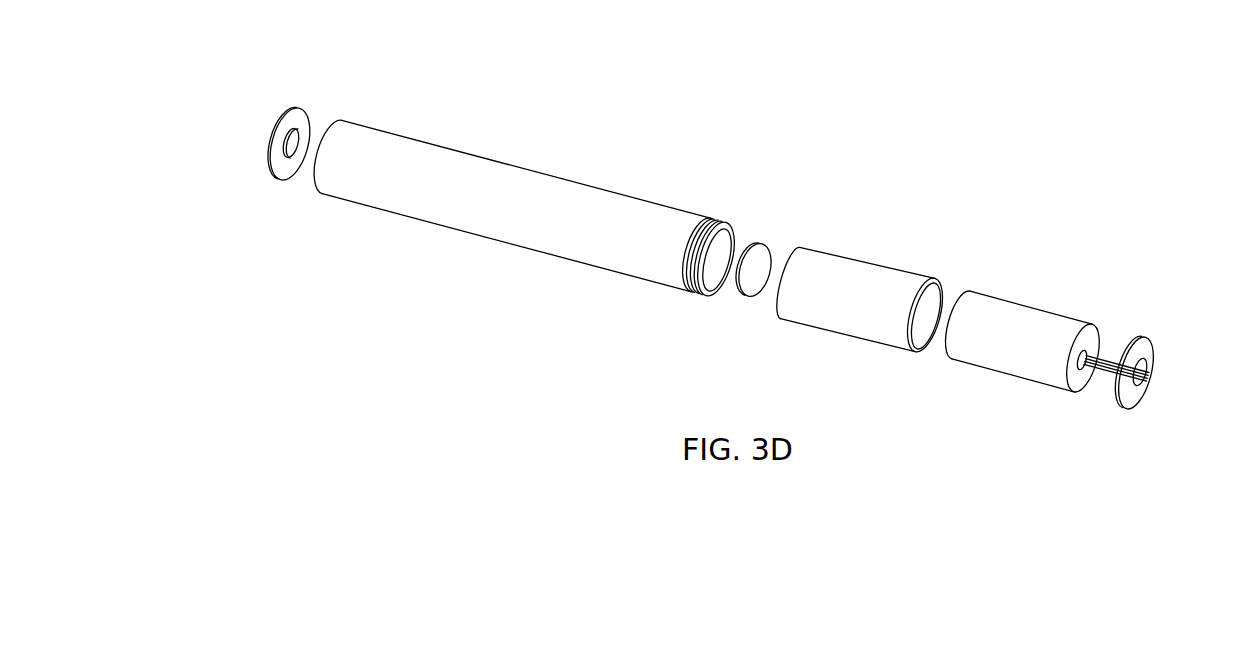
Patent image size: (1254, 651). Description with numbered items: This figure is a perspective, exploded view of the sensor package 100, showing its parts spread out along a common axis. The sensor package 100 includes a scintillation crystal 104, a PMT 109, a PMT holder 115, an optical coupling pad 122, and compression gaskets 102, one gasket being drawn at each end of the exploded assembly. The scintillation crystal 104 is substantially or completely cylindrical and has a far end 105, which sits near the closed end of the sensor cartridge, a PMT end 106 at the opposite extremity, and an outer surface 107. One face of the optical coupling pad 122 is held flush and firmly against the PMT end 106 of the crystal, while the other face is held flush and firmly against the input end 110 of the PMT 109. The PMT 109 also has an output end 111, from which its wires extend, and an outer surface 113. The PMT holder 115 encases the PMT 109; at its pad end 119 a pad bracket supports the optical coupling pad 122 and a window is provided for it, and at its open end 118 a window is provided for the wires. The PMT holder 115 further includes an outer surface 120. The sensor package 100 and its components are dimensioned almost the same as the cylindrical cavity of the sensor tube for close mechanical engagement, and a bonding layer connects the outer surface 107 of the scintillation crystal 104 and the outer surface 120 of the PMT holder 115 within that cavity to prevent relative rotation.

The sensor package 100 is at (882, 177).
The compression gaskets 102 is at (273, 137).
The scintillation crystal 104 is at (527, 168).
The far end 105 is at (326, 122).
The PMT end 106 is at (725, 220).
The outer surface 107 is at (435, 167).
The PMT 109 is at (1047, 319).
The input end 110 is at (958, 295).
The output end 111 is at (1093, 337).
The outer surface 113 is at (1039, 360).
The PMT holder 115 is at (823, 359).
The open end 118 is at (925, 352).
The pad end 119 is at (780, 300).
The outer surface 120 is at (880, 320).
The optical coupling pad 122 is at (762, 243).